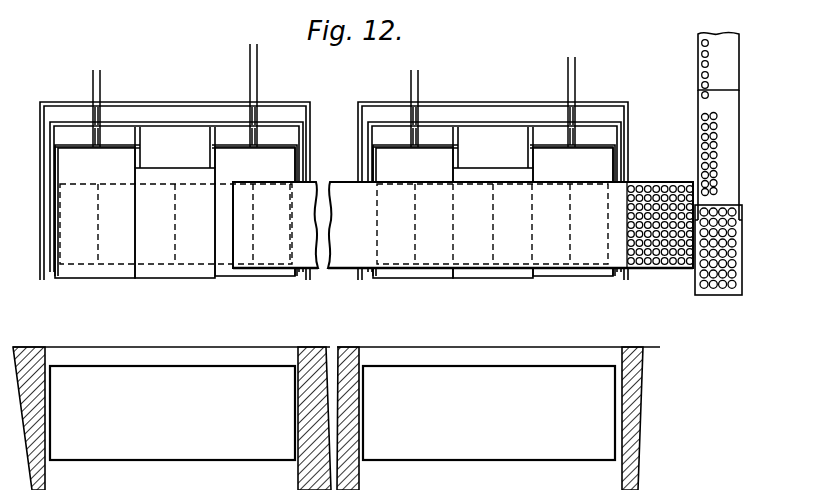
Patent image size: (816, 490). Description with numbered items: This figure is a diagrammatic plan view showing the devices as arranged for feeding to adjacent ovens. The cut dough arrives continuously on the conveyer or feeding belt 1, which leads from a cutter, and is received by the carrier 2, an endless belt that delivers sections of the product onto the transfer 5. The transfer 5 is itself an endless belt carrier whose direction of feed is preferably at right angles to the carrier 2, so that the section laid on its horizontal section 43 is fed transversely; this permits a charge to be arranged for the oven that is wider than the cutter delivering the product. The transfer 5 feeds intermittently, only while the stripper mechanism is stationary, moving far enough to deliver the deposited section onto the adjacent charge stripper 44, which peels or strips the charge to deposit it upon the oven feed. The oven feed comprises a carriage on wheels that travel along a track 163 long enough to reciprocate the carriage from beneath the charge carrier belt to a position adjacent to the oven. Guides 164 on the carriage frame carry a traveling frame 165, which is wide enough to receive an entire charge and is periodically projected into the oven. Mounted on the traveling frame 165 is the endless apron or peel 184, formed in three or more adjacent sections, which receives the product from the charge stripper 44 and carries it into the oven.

The conveyer or feeding belt 1 is at (733, 71).
The carrier 2 is at (736, 113).
The transfer 5 is at (738, 244).
The horizontal section 43 is at (742, 273).
The charge stripper 44 is at (660, 182).
The track 163 is at (97, 86).
The guides 164 is at (308, 152).
The traveling frame 165 is at (305, 136).
The apron or peel 184 is at (376, 211).